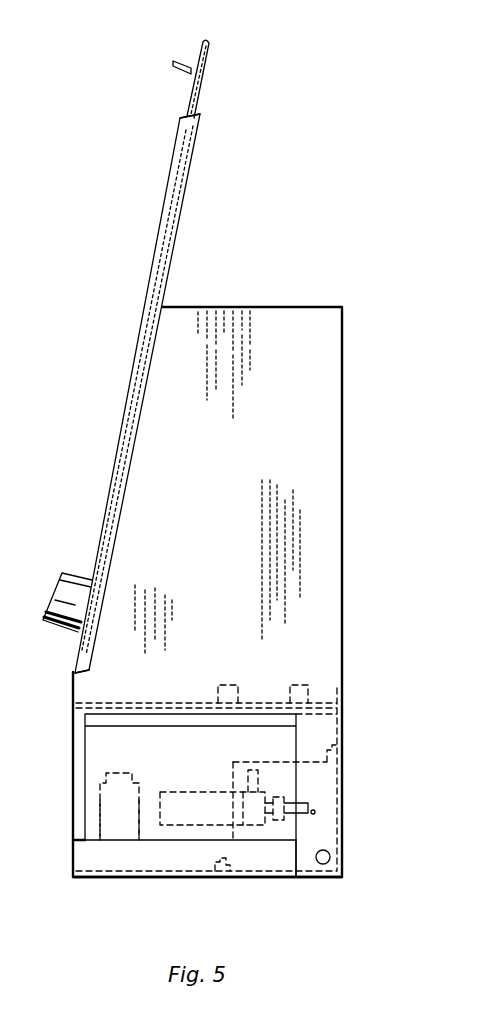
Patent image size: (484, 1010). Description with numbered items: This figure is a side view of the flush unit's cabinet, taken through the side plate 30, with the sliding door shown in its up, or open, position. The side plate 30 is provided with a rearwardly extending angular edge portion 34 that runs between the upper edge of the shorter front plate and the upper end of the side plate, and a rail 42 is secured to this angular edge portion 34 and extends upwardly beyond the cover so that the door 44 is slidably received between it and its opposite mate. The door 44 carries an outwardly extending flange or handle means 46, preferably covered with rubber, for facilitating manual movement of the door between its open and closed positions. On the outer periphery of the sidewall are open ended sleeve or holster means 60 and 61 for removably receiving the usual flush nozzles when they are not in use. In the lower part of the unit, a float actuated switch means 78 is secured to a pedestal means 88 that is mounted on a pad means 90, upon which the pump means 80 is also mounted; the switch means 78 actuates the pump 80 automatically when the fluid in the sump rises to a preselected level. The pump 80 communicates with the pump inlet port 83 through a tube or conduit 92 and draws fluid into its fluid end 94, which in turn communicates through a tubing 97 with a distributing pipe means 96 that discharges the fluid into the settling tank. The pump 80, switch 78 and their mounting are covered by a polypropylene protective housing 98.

The side plate 30 is at (236, 568).
The angular edge portion 34 is at (134, 424).
The rail 42 is at (107, 512).
The door 44 is at (200, 95).
The handle means 46 is at (173, 62).
The holster means 60 is at (55, 588).
The holster means 61 is at (52, 623).
The float actuated switch means 78 is at (100, 772).
The pump means 80 is at (174, 822).
The pump inlet port 83 is at (330, 857).
The pedestal means 88 is at (108, 815).
The pad means 90 is at (97, 865).
The tube or conduit 92 is at (308, 803).
The fluid end 94 is at (253, 818).
The distributing pipe means 96 is at (298, 844).
The tubing 97 is at (248, 778).
The protective housing 98 is at (190, 724).